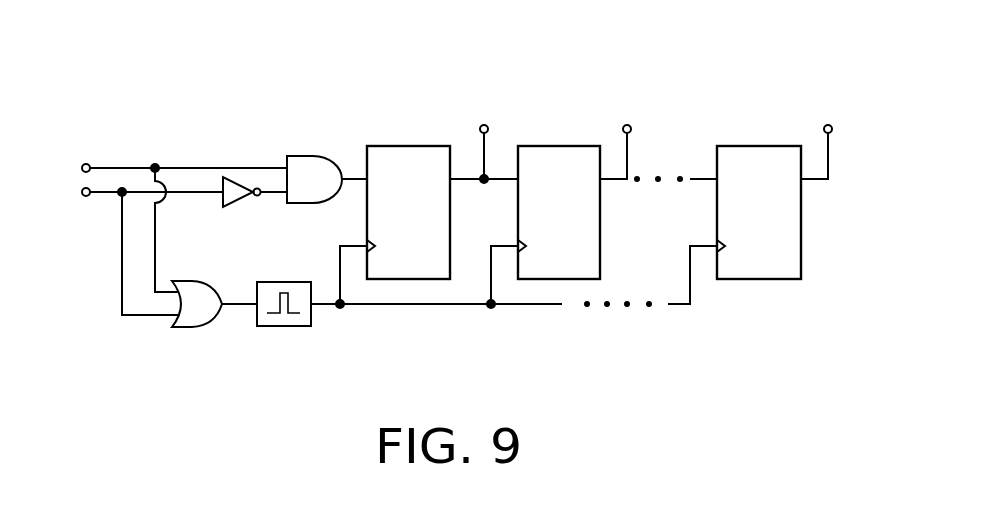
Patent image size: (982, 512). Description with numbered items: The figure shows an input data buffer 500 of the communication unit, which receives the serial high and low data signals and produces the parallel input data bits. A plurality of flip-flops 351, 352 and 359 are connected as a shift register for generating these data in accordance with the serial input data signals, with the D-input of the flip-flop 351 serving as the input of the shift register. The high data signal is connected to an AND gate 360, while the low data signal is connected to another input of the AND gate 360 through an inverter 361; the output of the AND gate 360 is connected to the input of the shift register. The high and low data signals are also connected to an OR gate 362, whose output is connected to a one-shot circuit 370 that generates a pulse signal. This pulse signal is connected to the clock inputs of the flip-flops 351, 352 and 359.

The input data buffer 500 is at (748, 37).
The AND gate 360 is at (307, 156).
The inverter 361 is at (237, 204).
The flip-flop 351 is at (412, 146).
The flip-flop 352 is at (562, 146).
The flip-flop 359 is at (762, 146).
The OR gate 362 is at (213, 325).
The one-shot circuit 370 is at (282, 327).